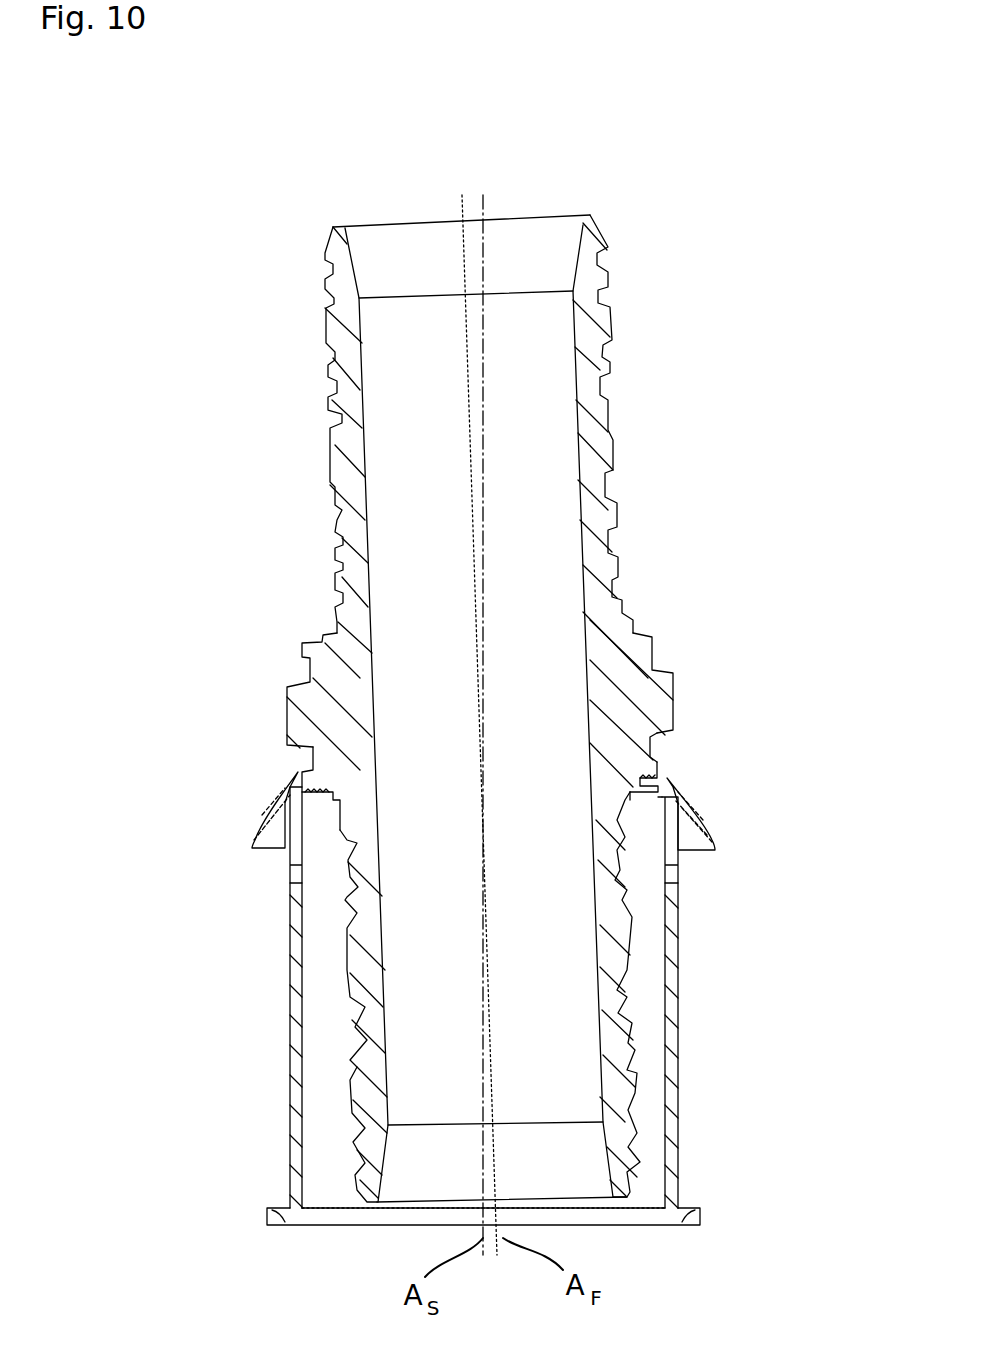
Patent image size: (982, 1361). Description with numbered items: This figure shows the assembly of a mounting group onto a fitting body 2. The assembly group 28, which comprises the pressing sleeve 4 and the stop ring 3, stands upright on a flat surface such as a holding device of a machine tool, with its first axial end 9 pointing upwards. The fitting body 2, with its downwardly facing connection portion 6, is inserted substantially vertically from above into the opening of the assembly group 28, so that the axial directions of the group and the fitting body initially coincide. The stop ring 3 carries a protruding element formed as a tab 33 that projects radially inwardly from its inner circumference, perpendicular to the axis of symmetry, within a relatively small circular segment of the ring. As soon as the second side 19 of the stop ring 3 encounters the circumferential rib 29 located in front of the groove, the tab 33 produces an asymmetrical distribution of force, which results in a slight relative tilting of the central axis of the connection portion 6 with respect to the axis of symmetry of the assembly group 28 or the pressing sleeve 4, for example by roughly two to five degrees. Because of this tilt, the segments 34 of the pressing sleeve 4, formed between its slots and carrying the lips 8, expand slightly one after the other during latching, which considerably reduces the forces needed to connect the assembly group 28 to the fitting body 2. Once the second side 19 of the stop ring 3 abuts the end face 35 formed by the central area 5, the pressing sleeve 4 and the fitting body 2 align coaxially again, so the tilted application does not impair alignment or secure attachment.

The fitting body 2 is at (593, 300).
The stop ring 3 is at (700, 822).
The pressing sleeve 4 is at (667, 1093).
The central area 5 is at (675, 698).
The connection portion 6 is at (368, 952).
The lips 8 is at (670, 798).
The first axial end 9 is at (258, 717).
The second side 19 is at (283, 780).
The assembly group 28 is at (182, 763).
The circumferential rib 29 is at (655, 755).
The tab 33 is at (657, 777).
The segments 34 is at (297, 818).
The end face 35 is at (297, 737).